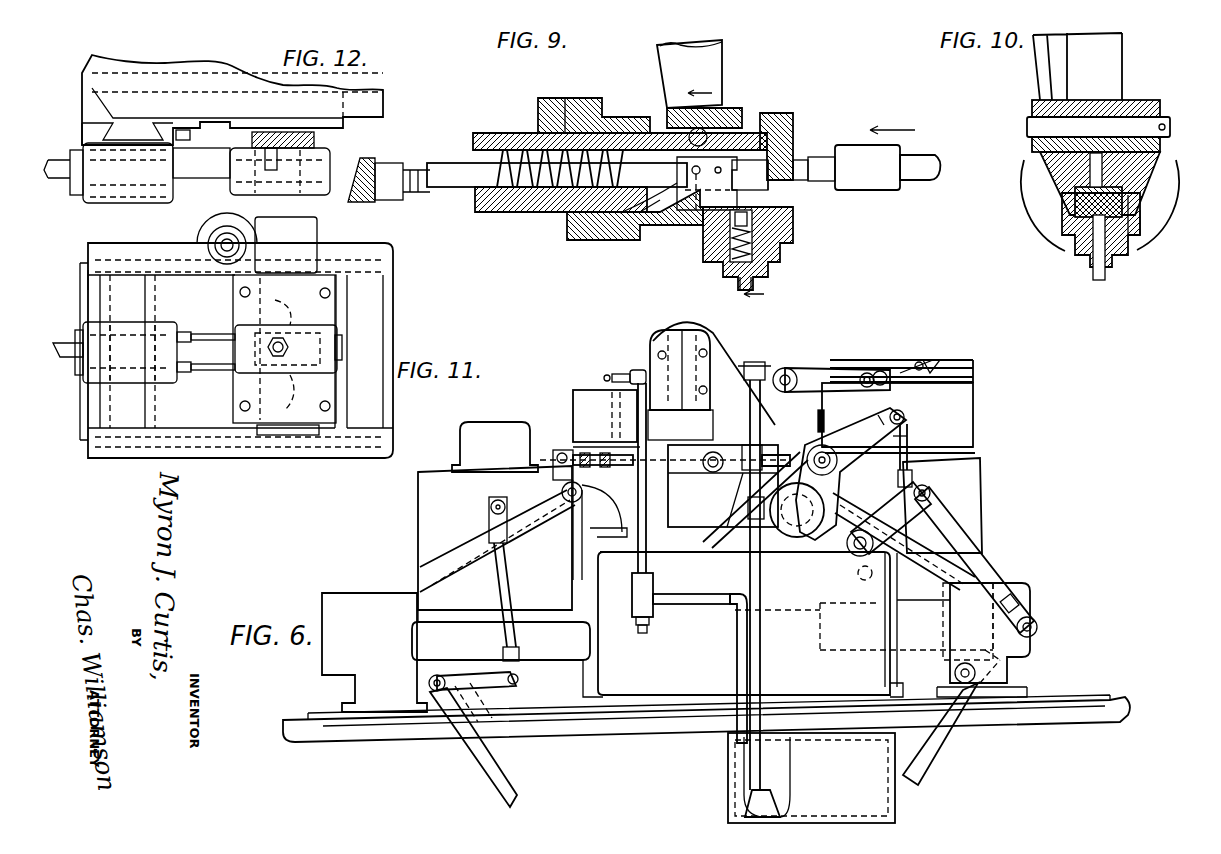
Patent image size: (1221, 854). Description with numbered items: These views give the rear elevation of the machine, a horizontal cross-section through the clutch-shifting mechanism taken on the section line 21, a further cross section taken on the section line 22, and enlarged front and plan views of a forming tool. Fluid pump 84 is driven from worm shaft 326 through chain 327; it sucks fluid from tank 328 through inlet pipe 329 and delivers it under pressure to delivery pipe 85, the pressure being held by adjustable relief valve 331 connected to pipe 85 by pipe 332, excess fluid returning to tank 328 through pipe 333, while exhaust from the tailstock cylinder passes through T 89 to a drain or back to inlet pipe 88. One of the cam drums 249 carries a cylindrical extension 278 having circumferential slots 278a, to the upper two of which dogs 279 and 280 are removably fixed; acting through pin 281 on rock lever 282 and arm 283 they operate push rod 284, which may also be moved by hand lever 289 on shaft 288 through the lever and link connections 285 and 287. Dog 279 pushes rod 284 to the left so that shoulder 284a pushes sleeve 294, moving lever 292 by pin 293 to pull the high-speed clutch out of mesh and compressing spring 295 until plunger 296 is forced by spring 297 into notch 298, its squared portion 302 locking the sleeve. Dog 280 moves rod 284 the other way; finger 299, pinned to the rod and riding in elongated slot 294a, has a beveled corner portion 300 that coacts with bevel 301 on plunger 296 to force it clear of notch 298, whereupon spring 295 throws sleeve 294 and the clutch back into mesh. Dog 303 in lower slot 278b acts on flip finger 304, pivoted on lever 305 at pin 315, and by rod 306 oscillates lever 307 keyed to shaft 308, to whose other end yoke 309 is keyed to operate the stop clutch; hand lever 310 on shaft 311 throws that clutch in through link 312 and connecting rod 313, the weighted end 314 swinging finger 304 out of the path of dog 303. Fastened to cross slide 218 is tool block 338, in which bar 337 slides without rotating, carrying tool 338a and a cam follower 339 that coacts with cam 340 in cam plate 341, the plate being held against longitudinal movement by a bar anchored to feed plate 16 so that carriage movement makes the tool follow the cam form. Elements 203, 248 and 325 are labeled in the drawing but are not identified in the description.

In FIG. 6, the feed plate 16 is at (306, 736).
In FIG. 6, the section line 21 is at (665, 465).
In FIG. 9, the section line 22 is at (737, 187).
In FIG. 6, the pump 84 is at (668, 338).
In FIG. 6, the delivery pipe 85 is at (647, 372).
In FIG. 6, the inlet pipe 88 is at (763, 669).
In FIG. 6, the T 89 is at (755, 502).
In FIG. 10, the wall 203 is at (1130, 200).
In FIG. 12, the cross slide 218 is at (130, 72).
In FIG. 11, the cross slide 218 is at (375, 406).
In FIG. 6, the guide rail 248 is at (432, 575).
In FIG. 6, the cam drum 249 is at (420, 521).
In FIG. 6, the cylindrical extension 278 is at (976, 408).
In FIG. 6, the circumferential slots 278a is at (975, 372).
In FIG. 6, the lower slot 278b is at (975, 449).
In FIG. 6, the dog 279 is at (930, 361).
In FIG. 6, the dog 280 is at (882, 373).
In FIG. 6, the pin 281 is at (866, 374).
In FIG. 6, the rock lever 282 is at (822, 370).
In FIG. 6, the arm 283 is at (773, 392).
In FIG. 9, the push rod 284 is at (818, 173).
In FIG. 10, the push rod 284 is at (1050, 165).
In FIG. 6, the push rod 284 is at (730, 483).
In FIG. 9, the shoulder 284a is at (768, 170).
In FIG. 12, the lever and link connection 285 is at (376, 162).
In FIG. 6, the lever and link connection 285 is at (562, 452).
In FIG. 6, the lever and link connection 287 is at (508, 575).
In FIG. 6, the shaft 288 is at (556, 480).
In FIG. 6, the hand lever 289 is at (486, 772).
In FIG. 9, the lever 292 is at (720, 53).
In FIG. 10, the lever 292 is at (1110, 64).
In FIG. 9, the pin 293 is at (720, 130).
In FIG. 10, the pin 293 is at (1027, 127).
In FIG. 9, the sleeve 294 is at (755, 130).
In FIG. 10, the sleeve 294 is at (1045, 178).
In FIG. 9, the elongated slot 294a is at (653, 205).
In FIG. 10, the elongated slot 294a is at (1048, 193).
In FIG. 9, the spring 295 is at (527, 134).
In FIG. 9, the plunger 296 is at (788, 233).
In FIG. 10, the plunger 296 is at (1070, 205).
In FIG. 6, the plunger 296 is at (698, 464).
In FIG. 9, the spring 297 is at (735, 268).
In FIG. 10, the spring 297 is at (1113, 261).
In FIG. 9, the notch 298 is at (730, 227).
In FIG. 9, the finger 299 is at (688, 213).
In FIG. 10, the finger 299 is at (1104, 167).
In FIG. 9, the beveled corner portion 300 is at (707, 183).
In FIG. 9, the bevel 301 is at (788, 212).
In FIG. 10, the bevel 301 is at (1145, 215).
In FIG. 9, the squared portion 302 is at (740, 200).
In FIG. 6, the dog 303 is at (888, 459).
In FIG. 6, the flip finger 304 is at (901, 413).
In FIG. 6, the lever 305 is at (860, 437).
In FIG. 6, the rod 306 is at (913, 469).
In FIG. 6, the lever 307 is at (893, 541).
In FIG. 6, the shaft 308 is at (840, 548).
In FIG. 6, the yoke 309 is at (858, 576).
In FIG. 6, the hand lever 310 is at (940, 741).
In FIG. 6, the shaft 311 is at (955, 675).
In FIG. 6, the link 312 is at (1010, 649).
In FIG. 6, the connecting rod 313 is at (1000, 579).
In FIG. 6, the weighted end 314 is at (880, 414).
In FIG. 6, the pin 315 is at (903, 419).
In FIG. 6, the pin 325 is at (907, 437).
In FIG. 6, the worm shaft 326 is at (760, 543).
In FIG. 6, the chain 327 is at (732, 497).
In FIG. 6, the tank 328 is at (811, 778).
In FIG. 6, the inlet pipe 329 is at (772, 771).
In FIG. 6, the adjustable relief valve 331 is at (653, 609).
In FIG. 6, the pipe 332 is at (645, 567).
In FIG. 6, the pipe 333 is at (737, 651).
In FIG. 12, the bar 337 is at (201, 154).
In FIG. 11, the bar 337 is at (210, 372).
In FIG. 12, the tool block 338 is at (82, 140).
In FIG. 11, the tool block 338 is at (87, 293).
In FIG. 12, the tool 338a is at (108, 173).
In FIG. 11, the tool 338a is at (95, 330).
In FIG. 12, the cam follower 339 is at (280, 148).
In FIG. 11, the cam follower 339 is at (292, 360).
In FIG. 11, the cam 340 is at (288, 322).
In FIG. 12, the cam plate 341 is at (301, 132).
In FIG. 11, the cam plate 341 is at (257, 243).